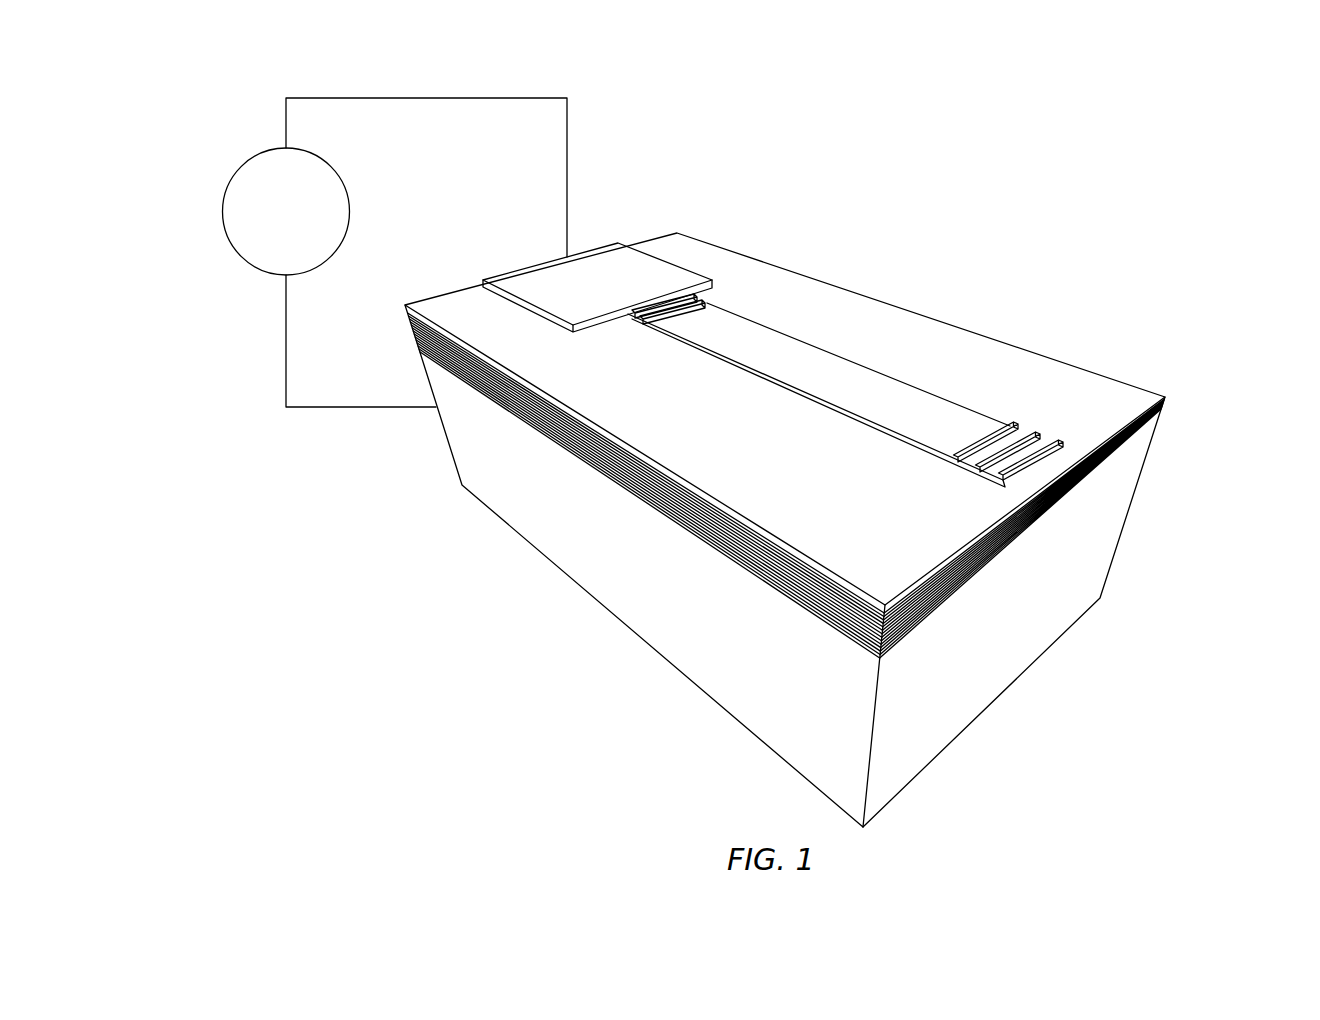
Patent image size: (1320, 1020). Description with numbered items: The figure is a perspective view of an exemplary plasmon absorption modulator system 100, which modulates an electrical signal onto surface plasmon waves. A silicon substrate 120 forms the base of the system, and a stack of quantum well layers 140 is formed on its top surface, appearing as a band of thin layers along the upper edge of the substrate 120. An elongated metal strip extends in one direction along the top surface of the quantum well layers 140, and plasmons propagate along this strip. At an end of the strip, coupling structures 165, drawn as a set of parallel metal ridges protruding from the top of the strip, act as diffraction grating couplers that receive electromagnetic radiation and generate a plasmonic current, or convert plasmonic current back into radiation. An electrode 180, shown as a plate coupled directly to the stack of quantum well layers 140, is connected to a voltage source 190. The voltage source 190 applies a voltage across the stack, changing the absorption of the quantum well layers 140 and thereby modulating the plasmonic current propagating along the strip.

The plasmon absorption modulator system 100 is at (1217, 216).
The substrate 120 is at (638, 638).
The stack of quantum well layers 140 is at (957, 588).
The coupling structures 165 is at (1066, 436).
The electrodes 180 is at (577, 261).
The voltage source 190 is at (350, 212).